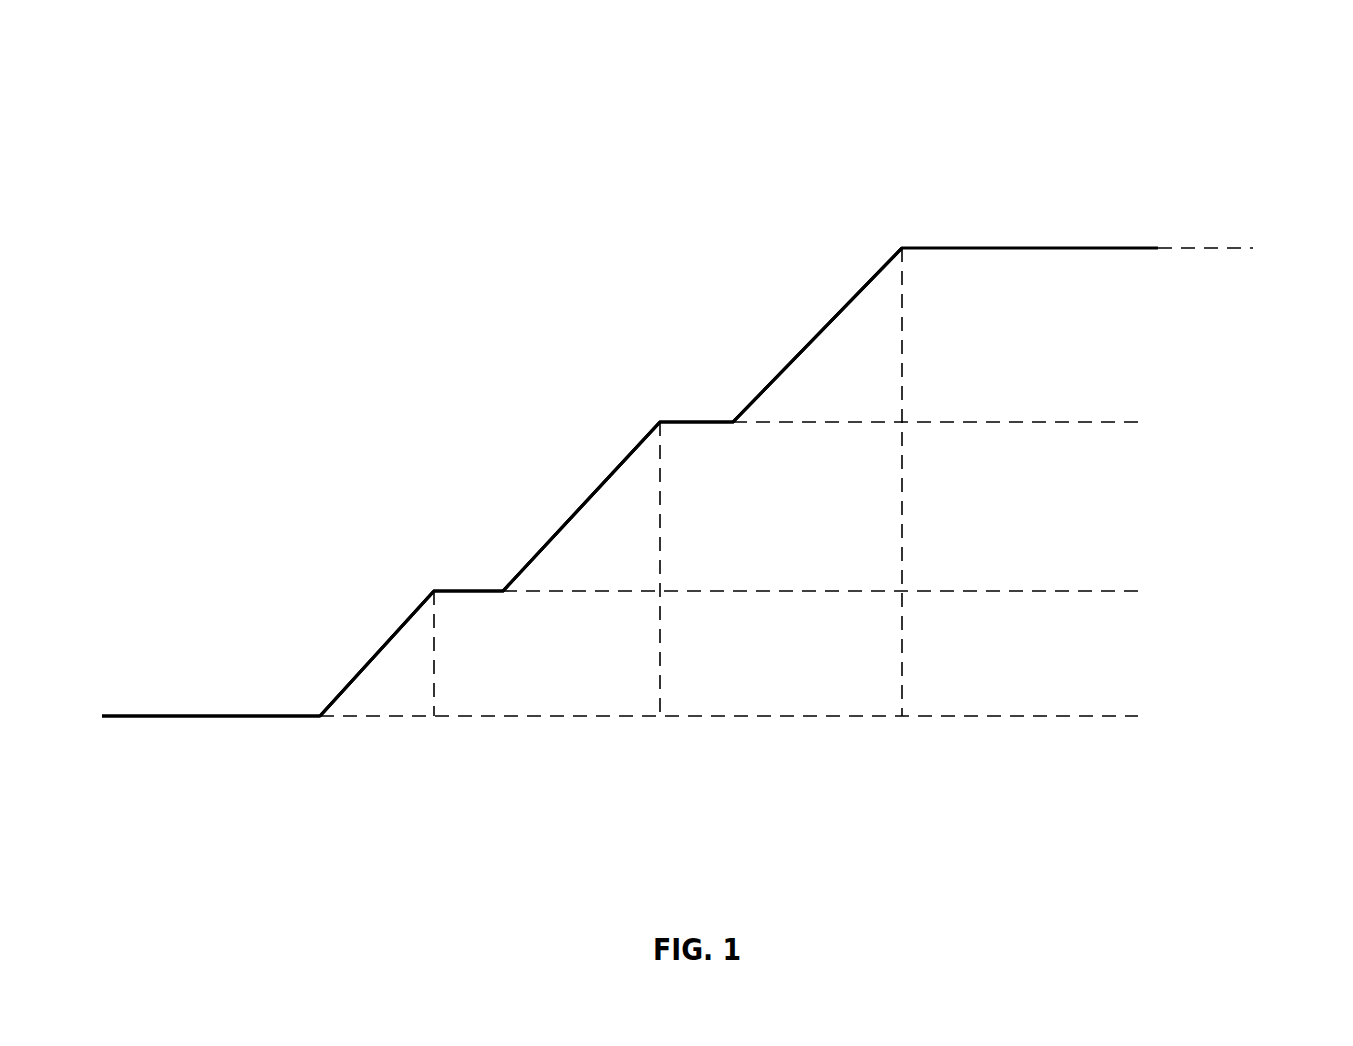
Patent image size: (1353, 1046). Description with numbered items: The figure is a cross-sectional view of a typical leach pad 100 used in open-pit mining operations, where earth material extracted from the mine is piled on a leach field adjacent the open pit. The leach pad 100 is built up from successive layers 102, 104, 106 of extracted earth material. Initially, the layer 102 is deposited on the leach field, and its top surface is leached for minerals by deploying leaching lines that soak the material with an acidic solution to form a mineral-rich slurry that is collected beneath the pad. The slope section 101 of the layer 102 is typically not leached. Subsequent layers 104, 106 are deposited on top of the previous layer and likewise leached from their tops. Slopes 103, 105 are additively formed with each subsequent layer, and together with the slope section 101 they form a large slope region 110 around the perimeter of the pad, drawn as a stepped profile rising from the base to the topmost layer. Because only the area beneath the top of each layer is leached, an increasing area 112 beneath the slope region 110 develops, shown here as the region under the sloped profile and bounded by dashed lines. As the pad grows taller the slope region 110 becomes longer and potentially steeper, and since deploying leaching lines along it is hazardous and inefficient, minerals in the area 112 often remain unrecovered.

The leach pad 100 is at (1246, 72).
The slope section 101 is at (347, 651).
The layer 102 is at (426, 684).
The slope 103 is at (525, 531).
The layer 104 is at (651, 532).
The slope 105 is at (780, 341).
The layer 106 is at (888, 364).
The slope region 110 is at (497, 430).
The area beneath the slope 112 is at (596, 792).